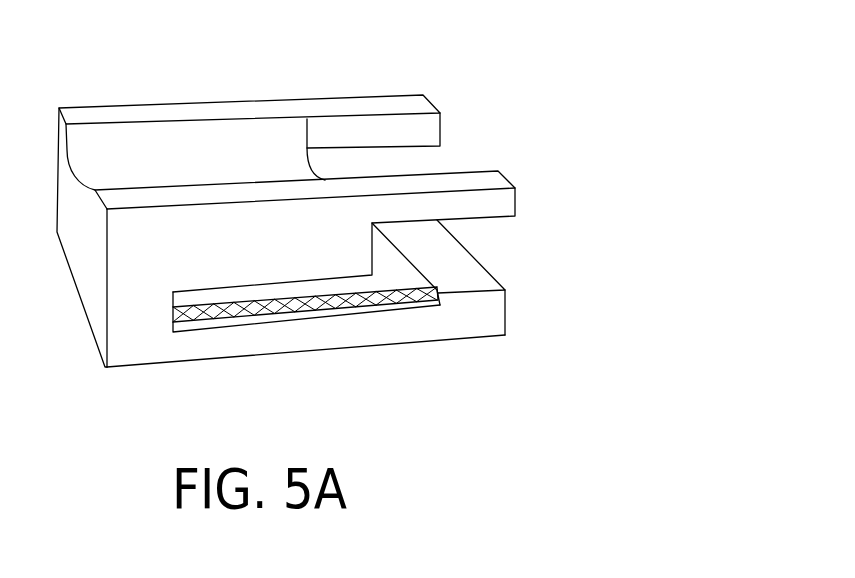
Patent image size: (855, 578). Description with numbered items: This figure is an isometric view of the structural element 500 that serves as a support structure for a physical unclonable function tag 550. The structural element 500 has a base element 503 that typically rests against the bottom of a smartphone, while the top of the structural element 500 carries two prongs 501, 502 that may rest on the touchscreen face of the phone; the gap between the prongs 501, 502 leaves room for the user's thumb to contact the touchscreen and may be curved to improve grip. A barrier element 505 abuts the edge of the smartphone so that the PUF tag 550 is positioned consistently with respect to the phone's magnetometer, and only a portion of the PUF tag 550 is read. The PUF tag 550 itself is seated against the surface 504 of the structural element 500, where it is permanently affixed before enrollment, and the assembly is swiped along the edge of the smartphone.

The structural element 500 is at (110, 82).
The prong 501 is at (470, 108).
The prong 502 is at (545, 175).
The base element 503 is at (498, 356).
The surface 504 is at (194, 302).
The barrier element 505 is at (389, 251).
The physical unclonable function tag 550 is at (377, 300).